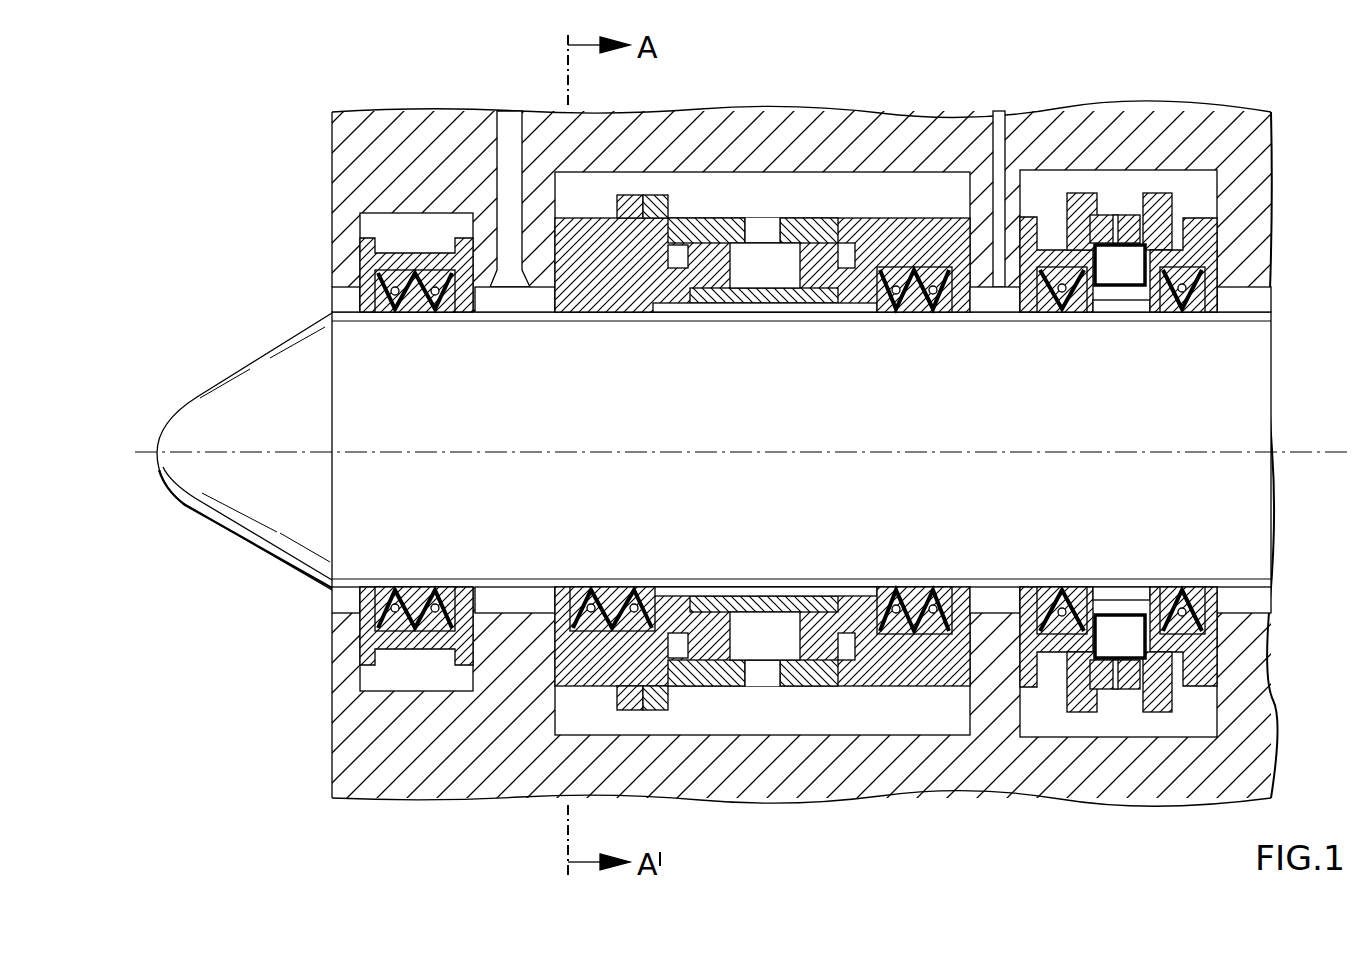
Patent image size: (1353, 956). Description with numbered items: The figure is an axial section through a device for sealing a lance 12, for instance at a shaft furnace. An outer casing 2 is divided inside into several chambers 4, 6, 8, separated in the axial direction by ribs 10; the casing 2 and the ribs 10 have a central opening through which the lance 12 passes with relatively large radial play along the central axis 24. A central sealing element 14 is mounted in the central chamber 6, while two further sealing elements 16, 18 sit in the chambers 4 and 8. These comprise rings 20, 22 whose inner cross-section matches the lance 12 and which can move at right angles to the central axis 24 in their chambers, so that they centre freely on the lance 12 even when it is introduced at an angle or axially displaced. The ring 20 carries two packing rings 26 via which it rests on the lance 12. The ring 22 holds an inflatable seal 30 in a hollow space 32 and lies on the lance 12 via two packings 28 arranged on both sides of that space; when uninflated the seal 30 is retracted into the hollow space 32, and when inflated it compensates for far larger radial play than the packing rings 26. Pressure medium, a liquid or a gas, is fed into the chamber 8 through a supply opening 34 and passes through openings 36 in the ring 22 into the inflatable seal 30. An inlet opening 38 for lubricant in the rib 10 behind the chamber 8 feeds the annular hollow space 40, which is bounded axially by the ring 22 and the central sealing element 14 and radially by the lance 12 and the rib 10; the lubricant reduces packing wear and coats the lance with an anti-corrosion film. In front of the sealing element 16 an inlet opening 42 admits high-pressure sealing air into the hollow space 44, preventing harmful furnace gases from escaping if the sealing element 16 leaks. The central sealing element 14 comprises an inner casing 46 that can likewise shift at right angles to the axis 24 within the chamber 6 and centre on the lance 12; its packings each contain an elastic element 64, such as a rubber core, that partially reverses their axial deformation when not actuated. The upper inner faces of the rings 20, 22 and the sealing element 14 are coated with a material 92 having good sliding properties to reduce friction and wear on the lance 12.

The outer casing 2 is at (403, 762).
The chamber 4 is at (395, 682).
The central chamber 6 is at (747, 713).
The chamber 8 is at (1048, 715).
The ribs 10 is at (512, 673).
The lance 12 is at (977, 400).
The central sealing element 14 is at (927, 190).
The sealing element 16 is at (413, 242).
The sealing element 18 is at (1043, 195).
The ring 20 is at (363, 647).
The ring 22 is at (1207, 647).
The central axis 24 is at (1283, 449).
The packing rings 26 is at (437, 588).
The packings 28 is at (1183, 300).
The inflatable seal 30 is at (1122, 592).
The hollow space 32 is at (1132, 638).
The supply opening 34 is at (1118, 212).
The openings 36 is at (1188, 132).
The inlet opening 38 is at (997, 153).
The annular hollow space 40 is at (1000, 592).
The inlet opening 42 is at (509, 140).
The hollow space 44 is at (515, 297).
The inner casing 46 is at (872, 232).
The elastic element 64 is at (435, 300).
The material 92 is at (333, 305).